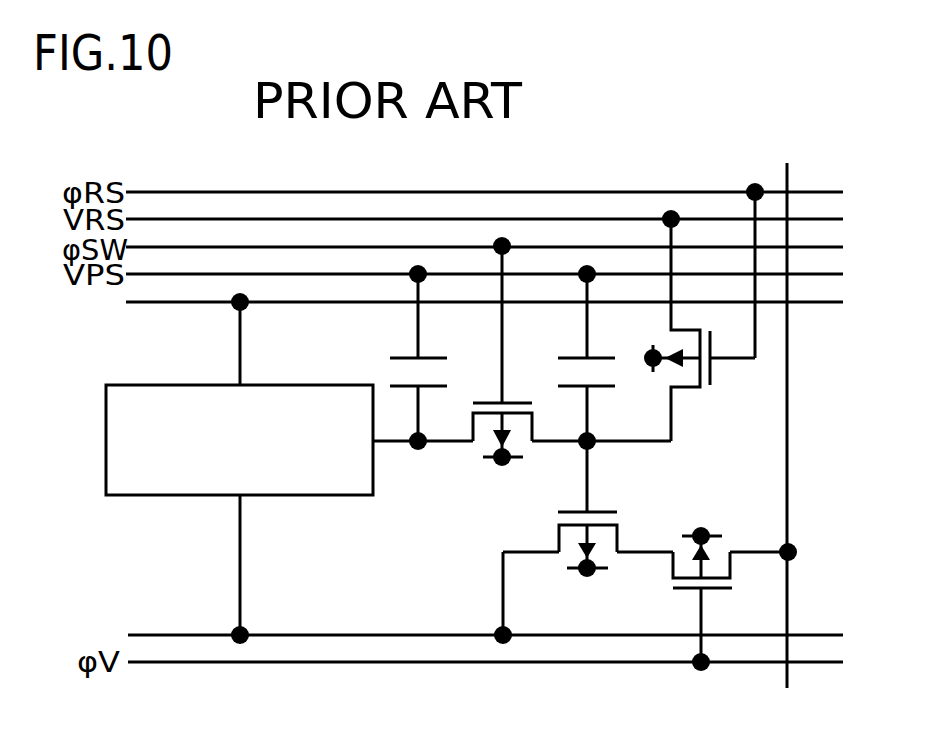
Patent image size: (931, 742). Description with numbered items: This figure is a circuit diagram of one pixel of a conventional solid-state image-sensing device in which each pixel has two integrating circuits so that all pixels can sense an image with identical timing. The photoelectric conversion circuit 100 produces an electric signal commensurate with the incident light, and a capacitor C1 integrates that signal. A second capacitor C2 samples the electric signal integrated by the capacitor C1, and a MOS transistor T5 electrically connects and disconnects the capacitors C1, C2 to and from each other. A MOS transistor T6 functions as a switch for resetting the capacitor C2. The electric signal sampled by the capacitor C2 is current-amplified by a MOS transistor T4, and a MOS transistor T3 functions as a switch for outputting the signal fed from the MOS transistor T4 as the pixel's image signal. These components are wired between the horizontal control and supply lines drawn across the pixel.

The photoelectric conversion circuit 100 is at (373, 482).
The capacitor C1 is at (428, 357).
The capacitor C2 is at (596, 357).
The MOS transistor T3 is at (702, 542).
The MOS transistor T4 is at (587, 563).
The MOS transistor T5 is at (502, 452).
The MOS transistor T6 is at (685, 330).